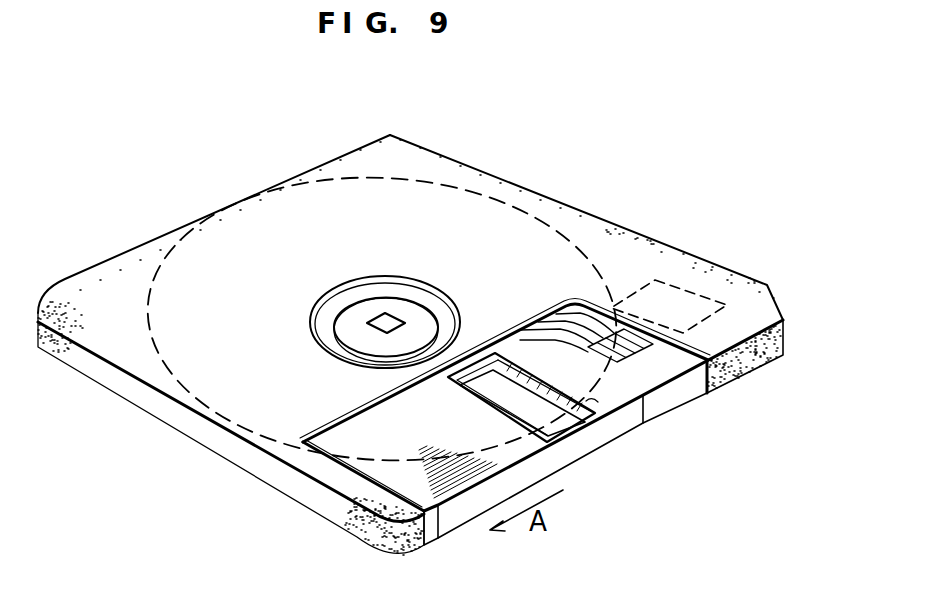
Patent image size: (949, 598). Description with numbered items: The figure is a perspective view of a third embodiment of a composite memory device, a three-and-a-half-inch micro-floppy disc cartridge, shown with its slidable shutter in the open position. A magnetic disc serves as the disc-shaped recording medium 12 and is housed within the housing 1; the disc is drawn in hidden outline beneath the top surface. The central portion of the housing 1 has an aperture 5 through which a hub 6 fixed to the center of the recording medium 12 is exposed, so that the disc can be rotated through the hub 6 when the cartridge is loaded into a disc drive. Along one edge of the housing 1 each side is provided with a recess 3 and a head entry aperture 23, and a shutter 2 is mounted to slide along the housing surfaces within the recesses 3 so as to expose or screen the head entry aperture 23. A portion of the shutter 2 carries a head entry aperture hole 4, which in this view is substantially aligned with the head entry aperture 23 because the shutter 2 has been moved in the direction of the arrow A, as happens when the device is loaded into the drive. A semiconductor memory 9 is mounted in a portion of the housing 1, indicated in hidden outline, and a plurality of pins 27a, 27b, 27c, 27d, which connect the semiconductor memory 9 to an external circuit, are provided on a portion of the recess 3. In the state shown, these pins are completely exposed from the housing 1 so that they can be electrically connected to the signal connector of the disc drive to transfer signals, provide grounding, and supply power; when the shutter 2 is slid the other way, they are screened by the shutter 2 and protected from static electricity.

The housing 1 is at (107, 348).
The shutter 2 is at (635, 422).
The recess 3 is at (662, 375).
The head entry aperture hole 4 is at (591, 400).
The aperture 5 is at (337, 287).
The hub 6 is at (334, 320).
The semiconductor memory 9 is at (673, 285).
The disc-shaped recording medium 12 is at (490, 193).
The head entry aperture 23 is at (460, 385).
The pin 27a is at (535, 325).
The pin 27b is at (558, 317).
The pin 27c is at (567, 307).
The pin 27d is at (602, 317).